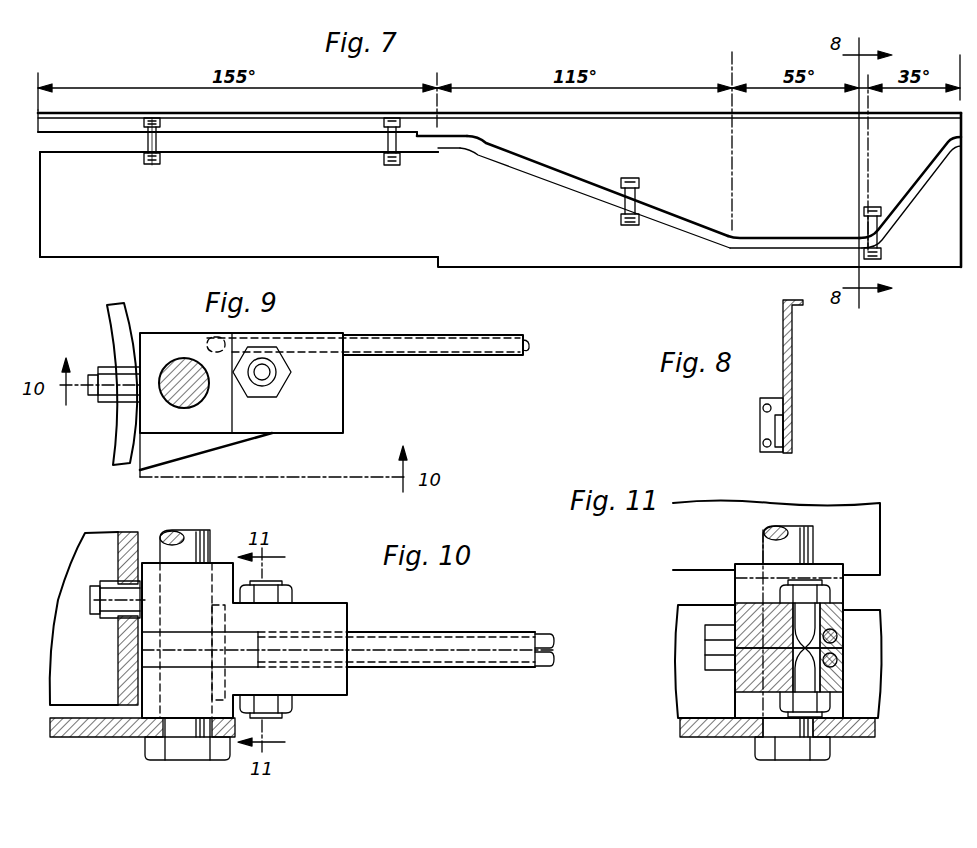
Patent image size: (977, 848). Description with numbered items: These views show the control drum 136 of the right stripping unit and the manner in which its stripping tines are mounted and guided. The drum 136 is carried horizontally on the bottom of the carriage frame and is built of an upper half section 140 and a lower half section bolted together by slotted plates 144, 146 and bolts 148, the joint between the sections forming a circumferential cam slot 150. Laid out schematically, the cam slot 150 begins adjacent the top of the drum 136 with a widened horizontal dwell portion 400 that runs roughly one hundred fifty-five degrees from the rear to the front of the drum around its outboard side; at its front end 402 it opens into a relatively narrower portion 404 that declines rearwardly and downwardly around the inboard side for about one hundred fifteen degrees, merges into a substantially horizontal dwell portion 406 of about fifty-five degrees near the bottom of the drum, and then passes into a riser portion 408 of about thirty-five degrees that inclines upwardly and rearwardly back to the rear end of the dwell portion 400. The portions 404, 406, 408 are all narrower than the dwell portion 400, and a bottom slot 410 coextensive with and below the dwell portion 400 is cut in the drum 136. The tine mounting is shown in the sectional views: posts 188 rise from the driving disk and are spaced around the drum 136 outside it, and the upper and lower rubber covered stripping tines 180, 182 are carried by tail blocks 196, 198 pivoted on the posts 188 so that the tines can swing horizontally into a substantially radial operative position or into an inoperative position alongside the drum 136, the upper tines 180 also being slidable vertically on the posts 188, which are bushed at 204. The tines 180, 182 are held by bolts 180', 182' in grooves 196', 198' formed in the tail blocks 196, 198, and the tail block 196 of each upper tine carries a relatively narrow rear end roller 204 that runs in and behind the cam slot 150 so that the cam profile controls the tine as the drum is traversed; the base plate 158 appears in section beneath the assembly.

In FIG. 7, the control drum 136 is at (397, 256).
In FIG. 9, the control drum 136 is at (120, 423).
In FIG. 10, the control drum 136 is at (80, 550).
In FIG. 11, the control drum 136 is at (740, 508).
In FIG. 8, the upper half section 140 is at (793, 340).
In FIG. 7, the slotted plate 144 is at (147, 138).
In FIG. 8, the slotted plate 144 is at (760, 422).
In FIG. 7, the slotted plate 146 is at (160, 136).
In FIG. 7, the bolt 148 is at (161, 161).
In FIG. 7, the cam slot 150 is at (333, 158).
In FIG. 10, the base plate 158 is at (112, 728).
In FIG. 9, the upper stripping tine 180 is at (368, 345).
In FIG. 10, the upper stripping tine 180 is at (348, 622).
In FIG. 9, the bolt 180' is at (272, 388).
In FIG. 10, the bolt 180' is at (289, 573).
In FIG. 11, the bolt 180' is at (828, 614).
In FIG. 10, the lower stripping tine 182 is at (406, 668).
In FIG. 10, the bolt 182' is at (294, 727).
In FIG. 11, the bolt 182' is at (854, 695).
In FIG. 9, the post 188 is at (178, 378).
In FIG. 10, the post 188 is at (197, 530).
In FIG. 11, the post 188 is at (800, 528).
In FIG. 10, the tail block 196 is at (245, 640).
In FIG. 11, the tail block 196 is at (755, 614).
In FIG. 11, the groove 196' is at (857, 614).
In FIG. 10, the tail block 198 is at (302, 680).
In FIG. 11, the tail block 198 is at (755, 678).
In FIG. 11, the groove 198' is at (874, 660).
In FIG. 10, the bushing 204 is at (115, 605).
In FIG. 7, the dwell portion 400 is at (287, 142).
In FIG. 7, the front end 402 is at (405, 146).
In FIG. 7, the declining portion 404 is at (533, 160).
In FIG. 7, the dwell portion 406 is at (809, 240).
In FIG. 7, the riser portion 408 is at (915, 180).
In FIG. 7, the bottom slot 410 is at (177, 258).